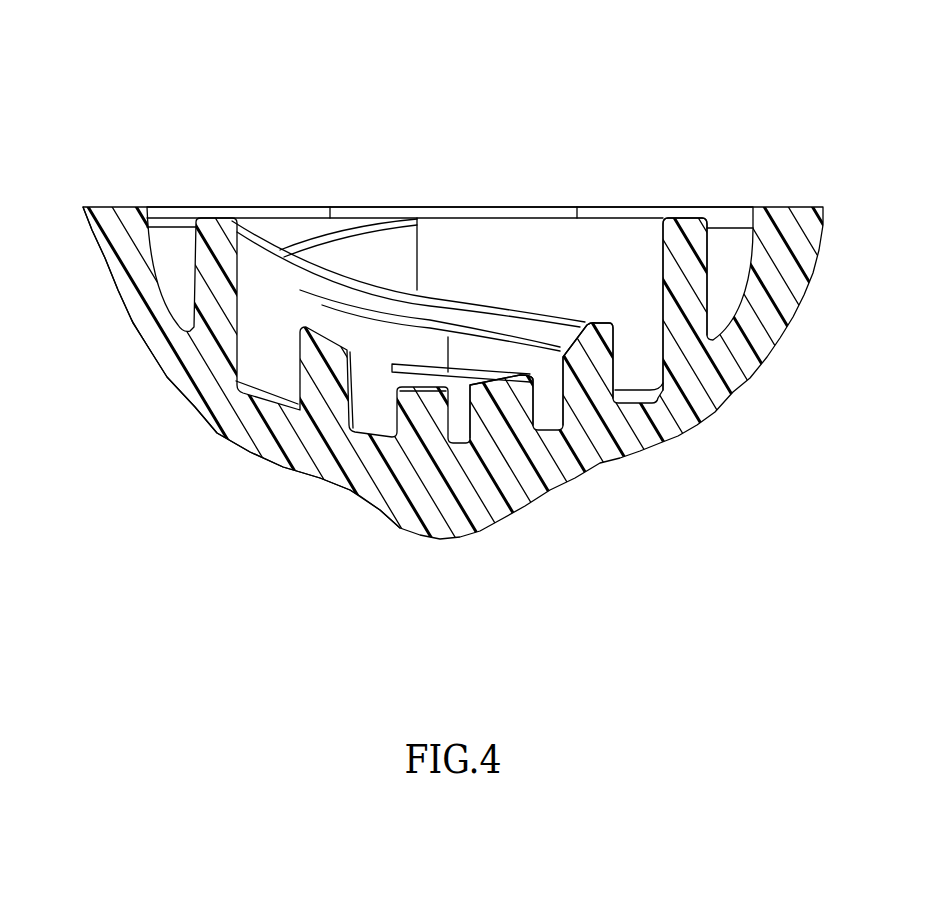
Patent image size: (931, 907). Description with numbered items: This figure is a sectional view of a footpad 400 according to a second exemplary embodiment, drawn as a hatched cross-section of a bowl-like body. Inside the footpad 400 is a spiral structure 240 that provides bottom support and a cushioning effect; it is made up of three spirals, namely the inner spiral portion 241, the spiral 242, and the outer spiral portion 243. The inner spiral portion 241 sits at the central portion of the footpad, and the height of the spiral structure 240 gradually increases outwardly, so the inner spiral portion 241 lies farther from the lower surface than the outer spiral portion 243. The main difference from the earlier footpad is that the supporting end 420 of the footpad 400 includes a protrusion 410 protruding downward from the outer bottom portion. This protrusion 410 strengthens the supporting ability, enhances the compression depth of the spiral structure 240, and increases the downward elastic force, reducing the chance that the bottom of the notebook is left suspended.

The footpad 400 is at (358, 170).
The protrusion 410 is at (448, 513).
The supporting end 420 is at (402, 535).
The spiral structure 240 is at (542, 132).
The inner spiral portion 241 is at (503, 403).
The spiral 242 is at (601, 322).
The outer spiral portion 243 is at (685, 249).